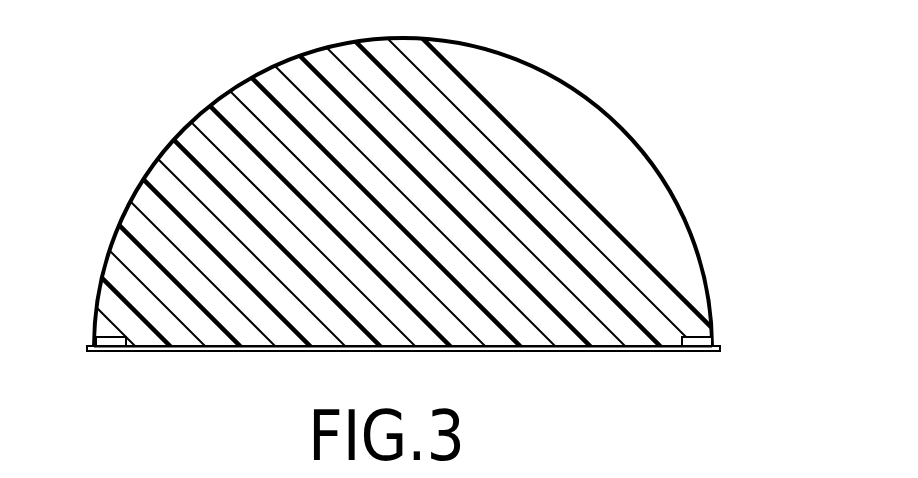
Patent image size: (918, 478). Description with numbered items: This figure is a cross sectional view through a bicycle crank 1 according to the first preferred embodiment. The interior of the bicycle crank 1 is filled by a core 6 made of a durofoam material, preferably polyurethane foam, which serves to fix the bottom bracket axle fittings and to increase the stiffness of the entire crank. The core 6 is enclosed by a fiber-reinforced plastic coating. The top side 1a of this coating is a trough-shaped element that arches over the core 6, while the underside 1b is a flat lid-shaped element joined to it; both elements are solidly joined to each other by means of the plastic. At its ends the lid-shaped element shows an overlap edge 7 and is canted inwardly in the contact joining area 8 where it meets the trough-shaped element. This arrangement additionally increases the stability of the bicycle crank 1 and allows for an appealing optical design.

The bicycle crank 1 is at (168, 40).
The top side of the fiber-reinforced plastic coating 1a is at (503, 54).
The underside of the fiber-reinforced plastic coating 1b is at (490, 351).
The core 6 is at (605, 138).
The overlap edge 7 is at (88, 347).
The contact joining area 8 is at (105, 337).